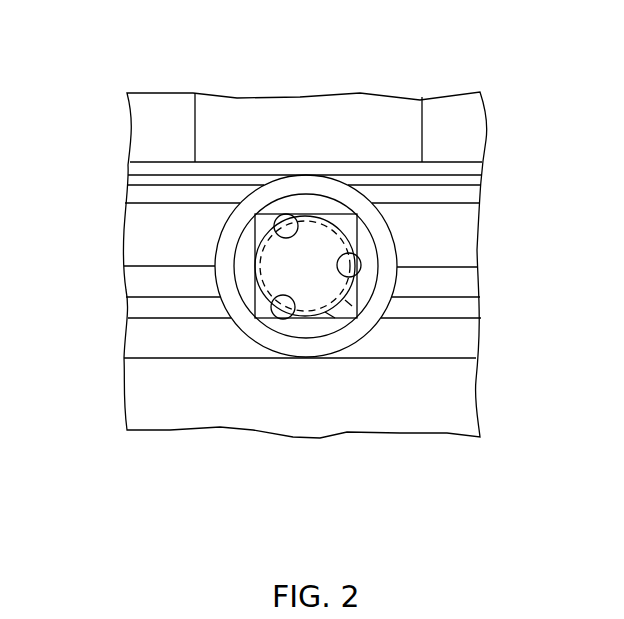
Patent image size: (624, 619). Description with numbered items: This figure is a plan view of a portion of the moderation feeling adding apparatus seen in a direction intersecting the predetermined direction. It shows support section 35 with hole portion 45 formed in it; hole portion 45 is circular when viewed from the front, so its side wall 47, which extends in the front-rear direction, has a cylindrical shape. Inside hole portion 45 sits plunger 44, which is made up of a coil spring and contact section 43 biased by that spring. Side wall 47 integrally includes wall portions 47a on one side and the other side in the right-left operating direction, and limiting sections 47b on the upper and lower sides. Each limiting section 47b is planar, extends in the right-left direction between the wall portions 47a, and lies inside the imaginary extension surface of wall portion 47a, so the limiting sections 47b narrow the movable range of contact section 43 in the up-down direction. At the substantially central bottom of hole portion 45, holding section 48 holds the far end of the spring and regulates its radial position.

The support section 35 is at (457, 338).
The contact section 43 is at (350, 303).
The plunger 44 is at (335, 310).
The hole portion 45 is at (343, 256).
The side wall 47 is at (236, 272).
The wall portion 47a is at (361, 264).
The limiting section 47b is at (298, 215).
The holding section 48 is at (356, 240).